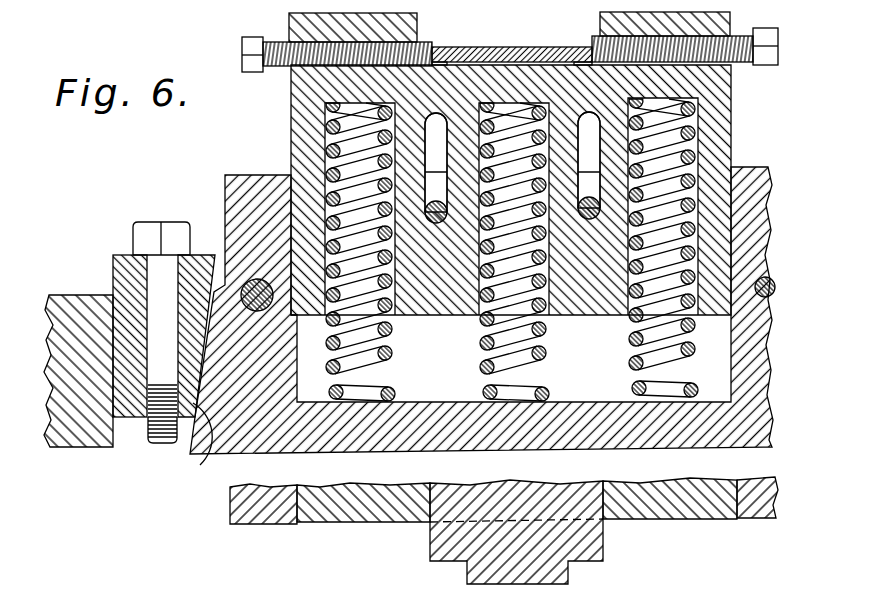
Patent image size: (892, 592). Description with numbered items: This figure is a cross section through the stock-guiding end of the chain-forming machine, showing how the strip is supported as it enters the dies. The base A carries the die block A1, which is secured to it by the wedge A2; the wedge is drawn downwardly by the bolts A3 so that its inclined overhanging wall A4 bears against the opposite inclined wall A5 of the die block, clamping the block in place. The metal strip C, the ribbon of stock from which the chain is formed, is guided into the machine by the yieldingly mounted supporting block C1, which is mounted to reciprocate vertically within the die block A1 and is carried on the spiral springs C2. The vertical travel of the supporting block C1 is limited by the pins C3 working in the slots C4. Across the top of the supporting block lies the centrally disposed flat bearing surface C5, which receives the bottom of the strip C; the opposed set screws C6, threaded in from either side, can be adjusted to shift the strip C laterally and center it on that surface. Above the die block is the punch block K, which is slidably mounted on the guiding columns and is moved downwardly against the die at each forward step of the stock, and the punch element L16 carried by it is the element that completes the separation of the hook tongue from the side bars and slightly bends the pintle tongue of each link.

The base A is at (50, 345).
The die block A1 is at (245, 197).
The wedge A2 is at (118, 283).
The bolts A3 is at (153, 278).
The inclined overhanging wall A4 is at (191, 257).
The inclined wall A5 is at (200, 465).
The metal strip C is at (457, 47).
The supporting block C1 is at (298, 135).
The spiral springs C2 is at (393, 360).
The pins C3 is at (592, 219).
The slots C4 is at (440, 118).
The flat bearing surface C5 is at (560, 43).
The set screws C6 is at (747, 90).
The punch block K is at (235, 512).
The punch element L16 is at (473, 575).